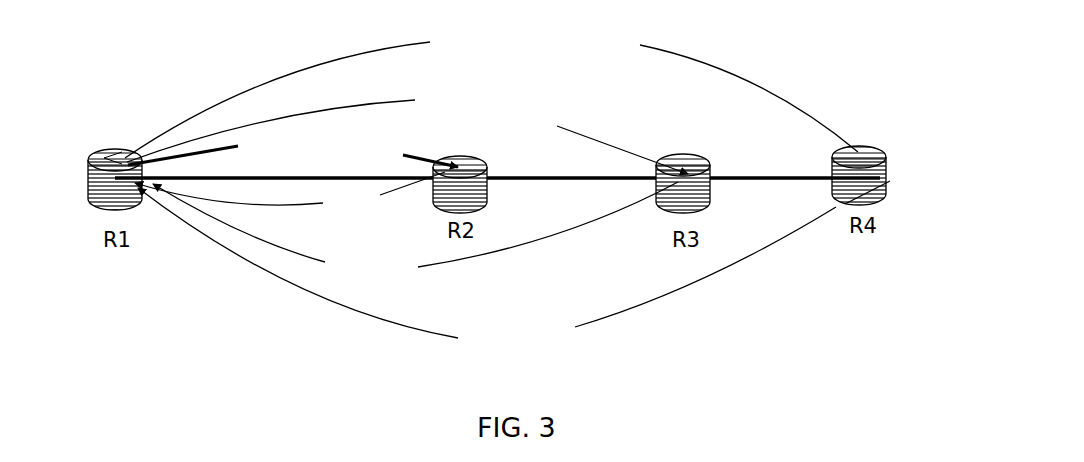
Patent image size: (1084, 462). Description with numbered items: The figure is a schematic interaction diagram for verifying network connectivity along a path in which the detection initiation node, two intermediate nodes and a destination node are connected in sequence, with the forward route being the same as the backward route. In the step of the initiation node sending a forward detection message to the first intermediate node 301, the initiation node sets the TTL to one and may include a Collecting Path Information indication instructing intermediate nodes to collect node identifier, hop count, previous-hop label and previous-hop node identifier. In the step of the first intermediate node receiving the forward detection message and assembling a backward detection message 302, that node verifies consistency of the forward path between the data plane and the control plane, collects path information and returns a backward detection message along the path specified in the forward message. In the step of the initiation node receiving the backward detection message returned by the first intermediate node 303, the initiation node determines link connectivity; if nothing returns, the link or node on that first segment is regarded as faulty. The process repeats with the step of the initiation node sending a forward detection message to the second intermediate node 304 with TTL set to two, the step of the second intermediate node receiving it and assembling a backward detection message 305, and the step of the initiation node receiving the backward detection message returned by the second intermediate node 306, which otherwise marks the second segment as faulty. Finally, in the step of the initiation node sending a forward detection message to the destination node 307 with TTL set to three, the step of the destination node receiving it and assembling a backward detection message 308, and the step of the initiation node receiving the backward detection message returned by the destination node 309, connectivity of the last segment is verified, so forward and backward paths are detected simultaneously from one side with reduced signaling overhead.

The step of R1 sending a forward detection message to R2 301 is at (293, 153).
The step of R2 receiving the forward detection message and assembling a backward det 302 is at (571, 194).
The step of R1 receiving the backward detection message returned by R2 303 is at (290, 197).
The step of R1 sending a forward detection message to R3 304 is at (407, 131).
The step of R3 receiving the forward detection message and assembling a backward det 305 is at (795, 196).
The step of R1 receiving the backward detection message returned by R3 306 is at (415, 229).
The step of R1 sending a forward detection message to R4 307 is at (491, 89).
The step of R4 receiving the forward detection message and assembling a backward det 308 is at (889, 186).
The step of R1 receiving the backward detection message returned by R4 309 is at (487, 267).